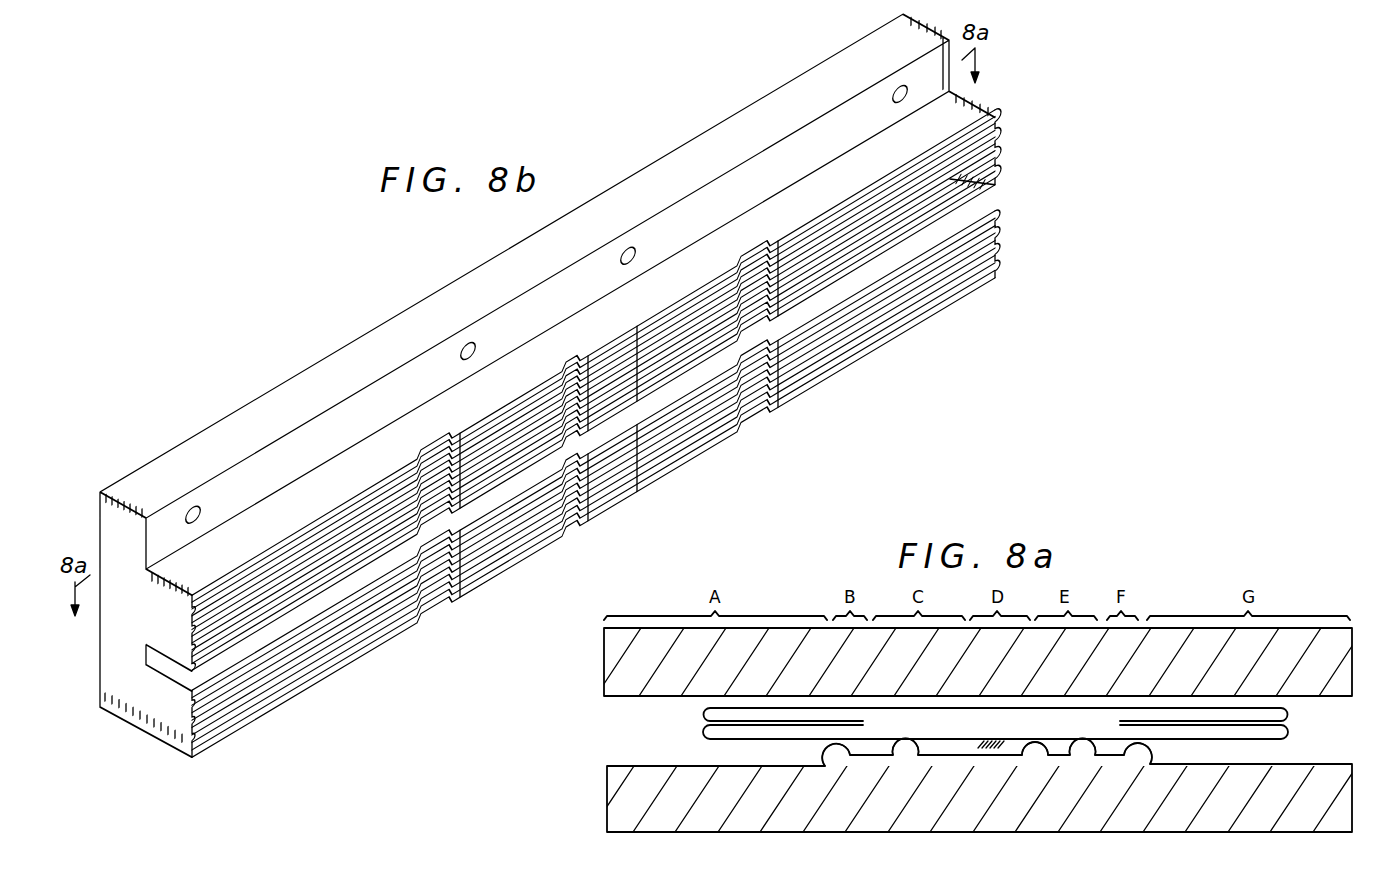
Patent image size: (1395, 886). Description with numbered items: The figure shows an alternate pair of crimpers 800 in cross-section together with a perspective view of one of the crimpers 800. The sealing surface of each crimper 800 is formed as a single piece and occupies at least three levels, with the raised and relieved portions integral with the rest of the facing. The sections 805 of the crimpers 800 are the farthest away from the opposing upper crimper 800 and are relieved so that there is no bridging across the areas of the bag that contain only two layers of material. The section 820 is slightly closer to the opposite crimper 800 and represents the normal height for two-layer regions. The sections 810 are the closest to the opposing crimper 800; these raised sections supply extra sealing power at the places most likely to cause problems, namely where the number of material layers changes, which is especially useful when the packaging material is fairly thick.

In FIG. 8a, the crimper 800 is at (695, 717).
In FIG. 8b, the sections of the crimpers 805 is at (750, 108).
In FIG. 8a, the sections of the crimpers 805 is at (1315, 762).
In FIG. 8b, the sections 810 is at (455, 612).
In FIG. 8a, the sections 810 is at (828, 772).
In FIG. 8b, the section 820 is at (512, 560).
In FIG. 8a, the section 820 is at (893, 772).